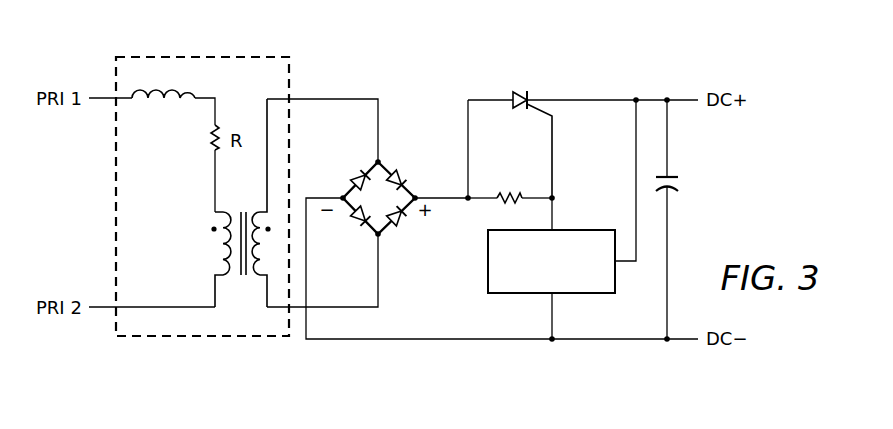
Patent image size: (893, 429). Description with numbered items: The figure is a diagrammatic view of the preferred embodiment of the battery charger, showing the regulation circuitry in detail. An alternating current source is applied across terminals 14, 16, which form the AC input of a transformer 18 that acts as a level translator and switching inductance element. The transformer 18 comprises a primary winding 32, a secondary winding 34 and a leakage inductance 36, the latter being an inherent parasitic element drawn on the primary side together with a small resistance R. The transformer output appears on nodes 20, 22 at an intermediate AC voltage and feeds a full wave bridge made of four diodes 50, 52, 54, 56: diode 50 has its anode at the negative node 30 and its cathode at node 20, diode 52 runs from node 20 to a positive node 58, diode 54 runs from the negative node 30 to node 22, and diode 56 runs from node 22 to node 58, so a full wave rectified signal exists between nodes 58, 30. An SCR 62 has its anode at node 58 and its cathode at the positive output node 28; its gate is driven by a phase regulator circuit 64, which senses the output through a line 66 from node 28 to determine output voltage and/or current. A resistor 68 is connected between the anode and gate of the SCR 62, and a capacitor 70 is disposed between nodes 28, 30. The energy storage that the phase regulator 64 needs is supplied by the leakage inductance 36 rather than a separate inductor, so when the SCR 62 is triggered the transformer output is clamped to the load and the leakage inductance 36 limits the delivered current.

The terminal 14 is at (102, 97).
The terminal 16 is at (101, 306).
The transformer 18 is at (113, 193).
The terminal 20 is at (352, 98).
The terminal 22 is at (378, 294).
The output node 28 is at (667, 98).
The negative node 30 is at (364, 198).
The primary winding 32 is at (220, 280).
The secondary winding 34 is at (265, 211).
The leakage inductance 36 is at (200, 97).
The diode 50 is at (360, 173).
The diode 52 is at (399, 173).
The diode 54 is at (356, 224).
The diode 56 is at (397, 224).
The positive node 58 is at (418, 198).
The SCR 62 is at (512, 95).
The phase regulator circuit 64 is at (584, 228).
The line 66 is at (633, 158).
The resistor 68 is at (513, 196).
The capacitor 70 is at (683, 186).